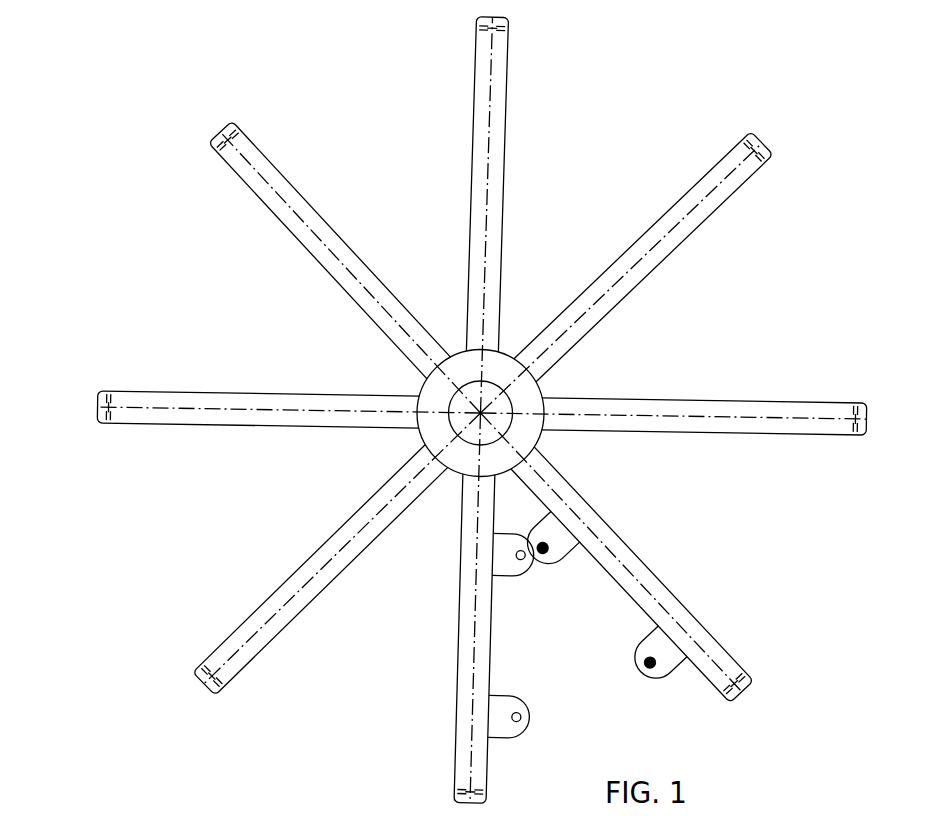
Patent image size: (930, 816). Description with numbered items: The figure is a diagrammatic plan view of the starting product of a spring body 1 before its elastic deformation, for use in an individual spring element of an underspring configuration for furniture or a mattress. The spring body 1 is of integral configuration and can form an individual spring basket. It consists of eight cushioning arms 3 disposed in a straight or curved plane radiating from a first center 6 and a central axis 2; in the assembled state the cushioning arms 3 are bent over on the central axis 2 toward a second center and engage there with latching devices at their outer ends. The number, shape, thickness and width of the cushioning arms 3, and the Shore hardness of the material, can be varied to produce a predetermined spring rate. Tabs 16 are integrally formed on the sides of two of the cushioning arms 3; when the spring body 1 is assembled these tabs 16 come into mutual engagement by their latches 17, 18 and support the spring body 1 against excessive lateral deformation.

The spring body 1 is at (364, 116).
The central axis 2 is at (480, 413).
The cushioning arms 3 is at (148, 399).
The first center 6 is at (438, 395).
The tabs 16 is at (688, 655).
The latch 17 is at (521, 716).
The latch 18 is at (646, 667).